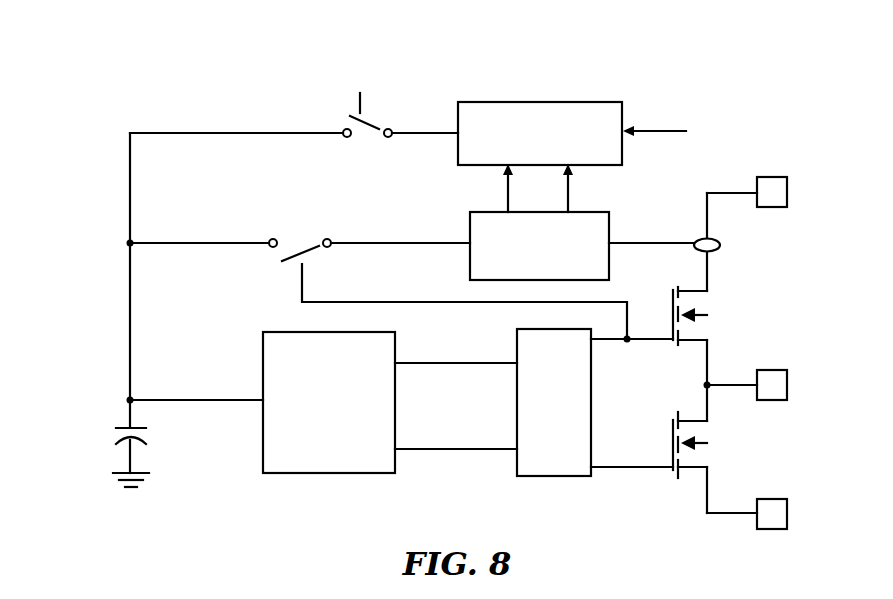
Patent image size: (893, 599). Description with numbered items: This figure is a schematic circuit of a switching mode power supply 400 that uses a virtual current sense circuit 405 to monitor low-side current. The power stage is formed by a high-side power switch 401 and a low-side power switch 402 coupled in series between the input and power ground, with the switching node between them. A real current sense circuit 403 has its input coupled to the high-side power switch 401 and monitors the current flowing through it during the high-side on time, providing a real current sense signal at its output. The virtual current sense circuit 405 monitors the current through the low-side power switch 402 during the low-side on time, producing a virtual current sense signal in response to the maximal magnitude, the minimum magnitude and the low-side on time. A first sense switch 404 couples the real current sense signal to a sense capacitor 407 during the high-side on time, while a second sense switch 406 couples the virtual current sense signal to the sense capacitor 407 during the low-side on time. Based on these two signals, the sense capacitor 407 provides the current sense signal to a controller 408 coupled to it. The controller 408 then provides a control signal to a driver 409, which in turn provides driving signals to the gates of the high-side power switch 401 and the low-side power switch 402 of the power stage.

The switching mode power supply 400 is at (159, 118).
The high-side power switch 401 is at (712, 301).
The low-side power switch 402 is at (714, 440).
The real current sense circuit 403 is at (459, 273).
The first sense switch 404 is at (306, 238).
The virtual current sense circuit 405 is at (533, 97).
The second sense switch 406 is at (364, 143).
The sense capacitor 407 is at (149, 433).
The controller 408 is at (257, 345).
The driver 409 is at (514, 394).